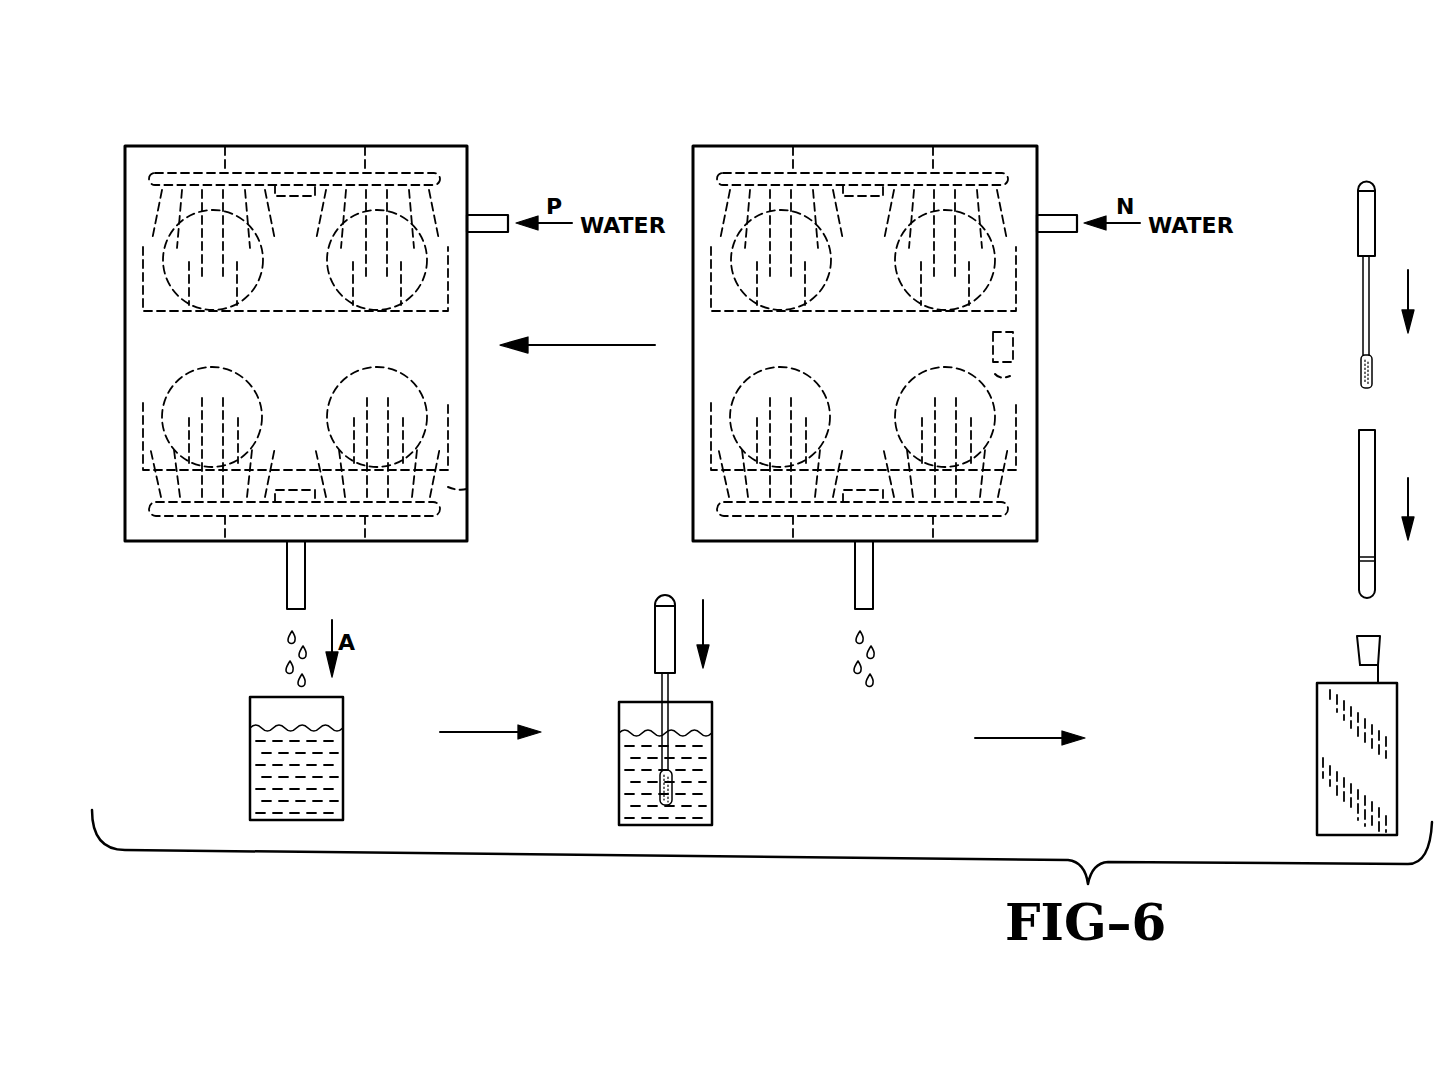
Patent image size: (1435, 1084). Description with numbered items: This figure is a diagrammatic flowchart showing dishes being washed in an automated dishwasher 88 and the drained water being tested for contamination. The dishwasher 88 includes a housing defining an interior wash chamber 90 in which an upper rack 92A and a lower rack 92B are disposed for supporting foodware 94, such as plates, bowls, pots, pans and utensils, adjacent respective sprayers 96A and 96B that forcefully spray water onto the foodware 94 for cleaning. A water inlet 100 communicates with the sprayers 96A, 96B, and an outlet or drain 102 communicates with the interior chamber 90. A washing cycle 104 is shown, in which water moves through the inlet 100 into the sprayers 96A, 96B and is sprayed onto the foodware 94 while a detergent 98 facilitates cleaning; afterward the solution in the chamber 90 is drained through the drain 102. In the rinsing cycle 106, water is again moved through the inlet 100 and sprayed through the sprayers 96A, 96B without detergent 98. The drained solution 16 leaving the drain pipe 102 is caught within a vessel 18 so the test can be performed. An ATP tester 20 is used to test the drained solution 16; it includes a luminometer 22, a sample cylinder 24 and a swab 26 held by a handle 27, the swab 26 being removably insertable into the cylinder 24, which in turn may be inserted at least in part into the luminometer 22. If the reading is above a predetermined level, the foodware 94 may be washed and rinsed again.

The drained solution 16 is at (285, 668).
The vessel 18 is at (343, 768).
The ATP tester 20 is at (1292, 685).
The luminometer 22 is at (1317, 728).
The sample cylinder 24 is at (1359, 492).
The swab 26 is at (658, 781).
The handle 27 is at (655, 638).
The automated dishwasher 88 is at (155, 142).
The interior wash chamber 90 is at (470, 488).
The upper rack 92A is at (448, 290).
The lower rack 92B is at (448, 437).
The foodware 94 is at (170, 392).
The sprayer 96A is at (208, 175).
The sprayer 96B is at (405, 518).
The detergent 98 is at (1013, 341).
The water inlet 100 is at (492, 232).
The drain 102 is at (287, 572).
The washing cycle 104 is at (950, 133).
The rinsing cycle 106 is at (380, 133).